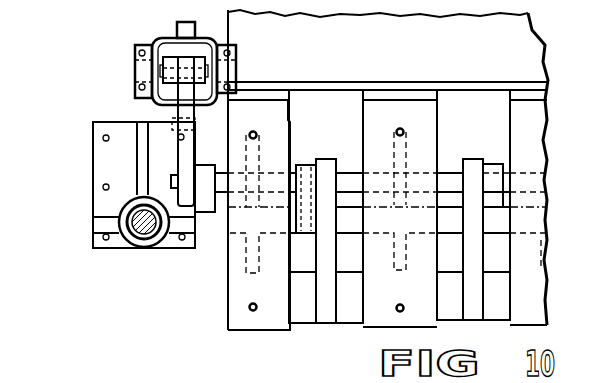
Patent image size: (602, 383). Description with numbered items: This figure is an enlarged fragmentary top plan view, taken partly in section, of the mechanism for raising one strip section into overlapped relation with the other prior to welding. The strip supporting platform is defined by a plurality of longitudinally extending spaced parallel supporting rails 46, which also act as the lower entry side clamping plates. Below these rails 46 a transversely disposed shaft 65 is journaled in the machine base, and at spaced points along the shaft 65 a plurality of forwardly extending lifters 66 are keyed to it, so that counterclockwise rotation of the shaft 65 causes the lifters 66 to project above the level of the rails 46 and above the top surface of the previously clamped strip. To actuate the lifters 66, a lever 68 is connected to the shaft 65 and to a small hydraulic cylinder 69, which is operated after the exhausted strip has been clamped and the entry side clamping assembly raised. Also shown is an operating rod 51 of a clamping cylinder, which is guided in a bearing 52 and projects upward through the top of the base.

The supporting rails 46 is at (420, 140).
The operating rods 51 is at (155, 245).
The bearings 52 is at (118, 133).
The shaft 65 is at (352, 182).
The lifters 66 is at (328, 292).
The lever 68 is at (185, 137).
The hydraulic cylinder 69 is at (215, 49).